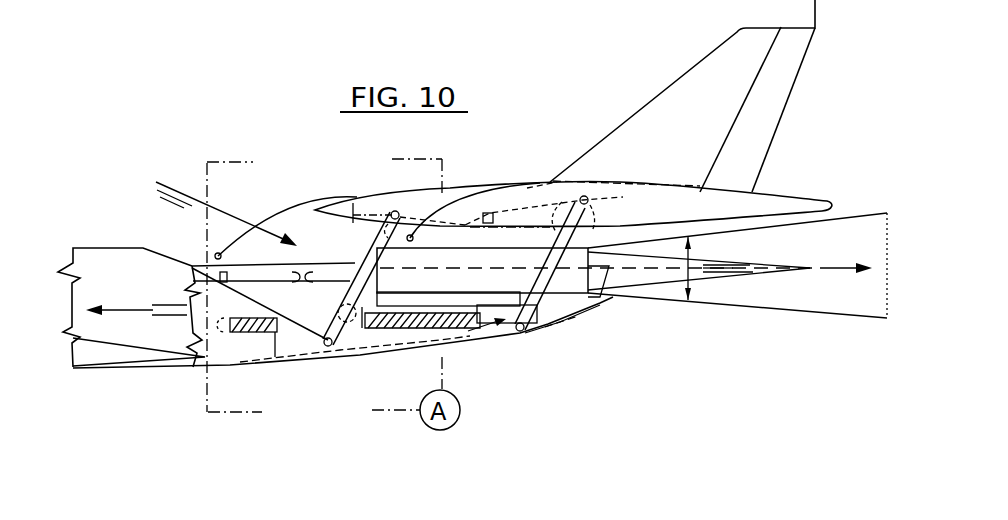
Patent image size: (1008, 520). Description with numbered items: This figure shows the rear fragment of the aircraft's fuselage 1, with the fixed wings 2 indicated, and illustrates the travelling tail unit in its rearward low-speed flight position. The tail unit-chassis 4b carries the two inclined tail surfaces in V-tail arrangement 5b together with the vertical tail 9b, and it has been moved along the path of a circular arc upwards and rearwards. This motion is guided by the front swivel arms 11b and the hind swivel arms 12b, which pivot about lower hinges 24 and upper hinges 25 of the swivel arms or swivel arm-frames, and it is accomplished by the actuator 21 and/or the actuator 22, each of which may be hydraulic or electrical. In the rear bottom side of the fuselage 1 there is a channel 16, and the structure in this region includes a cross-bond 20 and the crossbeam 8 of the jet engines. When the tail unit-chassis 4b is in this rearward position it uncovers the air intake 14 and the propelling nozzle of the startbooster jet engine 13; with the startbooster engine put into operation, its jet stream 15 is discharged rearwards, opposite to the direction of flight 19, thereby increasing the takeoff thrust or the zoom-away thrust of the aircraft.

The fuselage 1 is at (165, 337).
The fixed wings 2 is at (130, 355).
The tail unit-chassis in its rearward low-speed flight position 4b is at (537, 182).
The two inclined tail surfaces in V-tail arrangement, in their rearward low-speed fl 5b is at (721, 91).
The vertical tail in its rearward low-speed flight position 9b is at (803, 155).
The crossbeam of the jet engines 8 is at (453, 323).
The front swivel arms in their rearward low-speed flight position 11b is at (272, 182).
The hind swivel arms in their rearward low-speed flight position 12b is at (555, 282).
The startbooster jet engine 13 is at (588, 352).
The air intake of the startbooster jet engine 14 is at (184, 203).
The jet stream of the startbooster engine 15 is at (689, 270).
The channel in the rear bottom side of the fuselage 16 is at (417, 397).
The direction of flight 19 is at (130, 311).
The cross-bond 20 is at (501, 370).
The actuator 21 is at (446, 392).
The actuator 22 is at (550, 119).
The lower hinges of the swivel arms 24 is at (328, 346).
The upper hinges of the swivel arms 25 is at (632, 40).